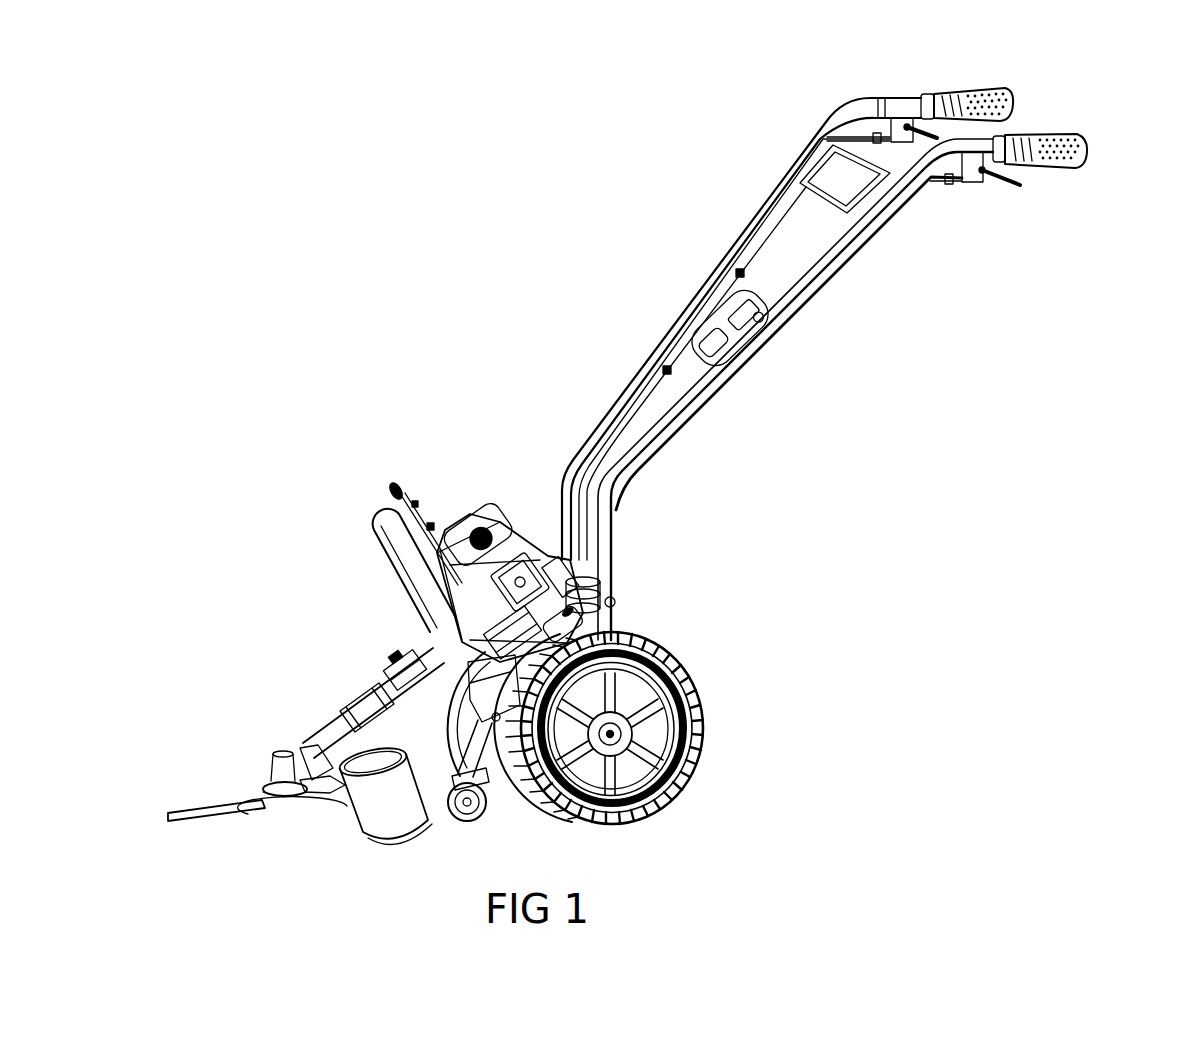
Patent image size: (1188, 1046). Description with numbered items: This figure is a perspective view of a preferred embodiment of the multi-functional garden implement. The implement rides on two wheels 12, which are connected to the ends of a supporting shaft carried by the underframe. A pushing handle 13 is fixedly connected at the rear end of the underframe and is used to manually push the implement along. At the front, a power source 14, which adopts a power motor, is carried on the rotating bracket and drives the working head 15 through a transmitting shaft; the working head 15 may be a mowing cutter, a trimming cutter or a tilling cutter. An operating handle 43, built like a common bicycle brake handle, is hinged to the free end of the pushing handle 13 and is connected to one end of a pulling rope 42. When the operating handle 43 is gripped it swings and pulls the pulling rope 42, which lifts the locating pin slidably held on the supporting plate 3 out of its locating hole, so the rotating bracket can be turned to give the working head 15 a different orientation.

The supporting plate 3 is at (390, 668).
The wheels 12 is at (703, 716).
The pushing handle 13 is at (790, 297).
The power source 14 is at (507, 546).
The working head 15 is at (270, 784).
The pulling rope 42 is at (770, 342).
The operating handle 43 is at (1005, 183).